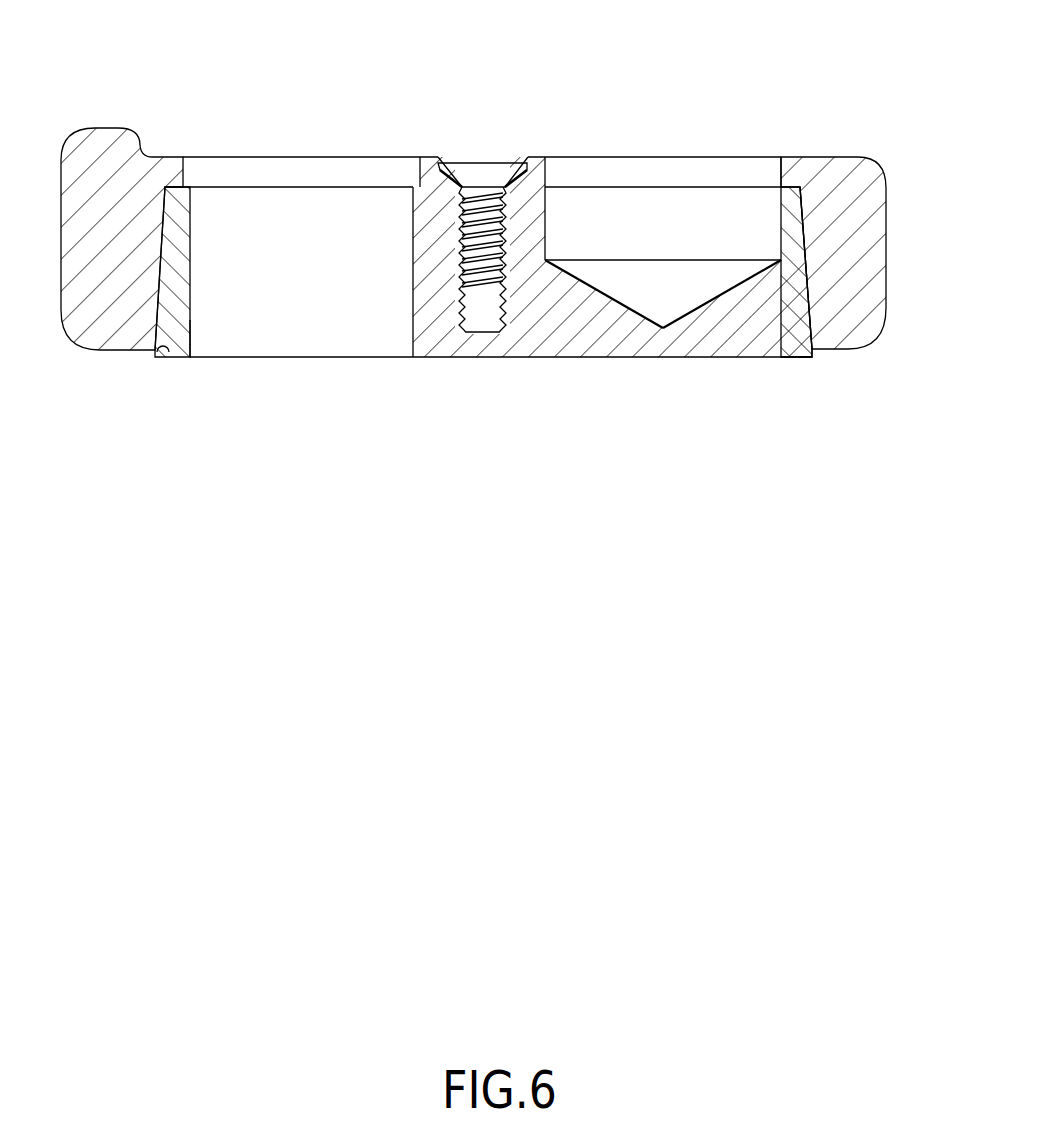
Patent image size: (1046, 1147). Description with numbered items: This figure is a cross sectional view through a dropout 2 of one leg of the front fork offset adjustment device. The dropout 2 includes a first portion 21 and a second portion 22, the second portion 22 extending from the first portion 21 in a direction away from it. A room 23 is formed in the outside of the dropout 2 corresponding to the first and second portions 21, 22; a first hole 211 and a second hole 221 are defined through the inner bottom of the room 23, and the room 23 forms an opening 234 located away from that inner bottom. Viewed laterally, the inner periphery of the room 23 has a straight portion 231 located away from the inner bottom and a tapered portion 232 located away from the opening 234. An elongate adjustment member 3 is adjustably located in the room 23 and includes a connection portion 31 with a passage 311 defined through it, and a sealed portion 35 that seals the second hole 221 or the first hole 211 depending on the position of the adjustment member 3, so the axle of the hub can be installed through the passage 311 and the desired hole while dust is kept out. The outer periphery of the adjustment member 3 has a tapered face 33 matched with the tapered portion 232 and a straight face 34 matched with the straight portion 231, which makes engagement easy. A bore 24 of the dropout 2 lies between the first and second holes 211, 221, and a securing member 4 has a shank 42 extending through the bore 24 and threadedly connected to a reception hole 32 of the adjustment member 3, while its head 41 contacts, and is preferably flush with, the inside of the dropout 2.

The dropout 2 is at (99, 108).
The first portion 21 is at (98, 340).
The second portion 22 is at (870, 338).
The first hole 211 is at (187, 173).
The second hole 221 is at (547, 175).
The bore 24 is at (463, 171).
The adjustment member 3 is at (487, 368).
The connection portion 31 is at (182, 253).
The passage 311 is at (192, 337).
The opening 234 is at (158, 350).
The reception hole 32 is at (466, 268).
The tapered face 33 is at (803, 214).
The sealed portion 35 is at (803, 292).
The straight face 34 is at (785, 348).
The room 23 is at (791, 440).
The straight portion 231 is at (822, 338).
The tapered portion 232 is at (747, 288).
The securing member 4 is at (545, 72).
The head 41 is at (487, 178).
The shank 42 is at (518, 208).